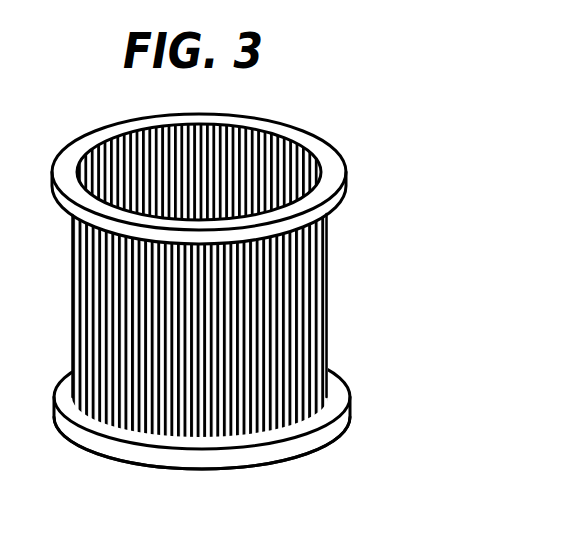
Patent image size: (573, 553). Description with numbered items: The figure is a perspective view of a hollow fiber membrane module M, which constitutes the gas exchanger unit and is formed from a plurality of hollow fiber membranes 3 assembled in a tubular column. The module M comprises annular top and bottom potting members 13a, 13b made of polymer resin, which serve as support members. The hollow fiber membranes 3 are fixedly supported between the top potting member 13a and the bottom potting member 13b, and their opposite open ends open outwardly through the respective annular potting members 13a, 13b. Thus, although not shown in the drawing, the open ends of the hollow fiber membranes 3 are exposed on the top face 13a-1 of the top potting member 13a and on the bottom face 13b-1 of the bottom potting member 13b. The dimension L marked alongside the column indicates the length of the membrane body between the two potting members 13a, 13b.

The hollow fiber membranes 3 is at (327, 273).
The top potting member 13a is at (332, 203).
The top face of the top potting member 13a-1 is at (327, 160).
The bottom potting member 13b is at (340, 423).
The bottom face of the bottom potting member 13b-1 is at (275, 463).
The hollow fiber membrane module M is at (326, 342).
The length of filter element L is at (48, 198).